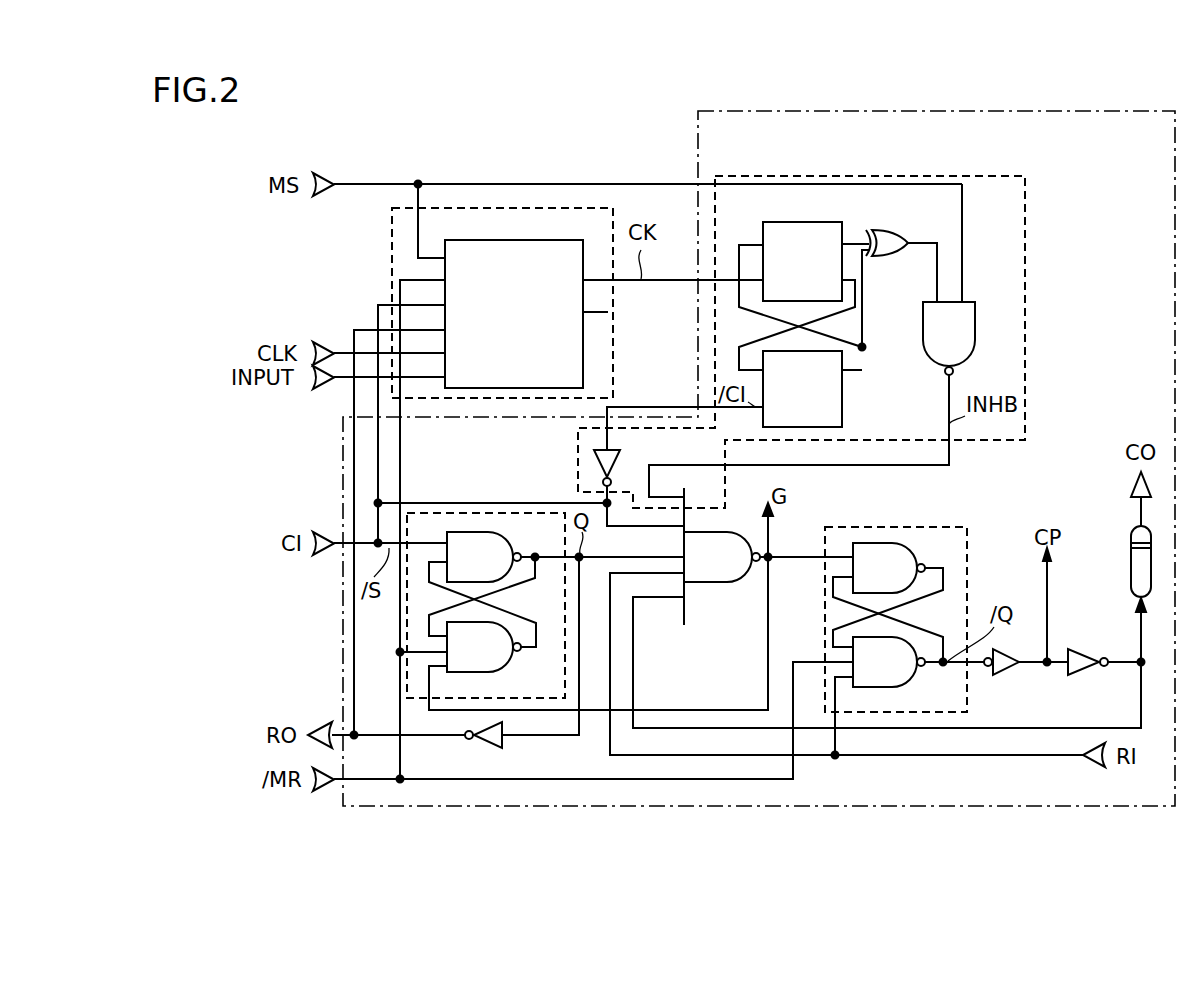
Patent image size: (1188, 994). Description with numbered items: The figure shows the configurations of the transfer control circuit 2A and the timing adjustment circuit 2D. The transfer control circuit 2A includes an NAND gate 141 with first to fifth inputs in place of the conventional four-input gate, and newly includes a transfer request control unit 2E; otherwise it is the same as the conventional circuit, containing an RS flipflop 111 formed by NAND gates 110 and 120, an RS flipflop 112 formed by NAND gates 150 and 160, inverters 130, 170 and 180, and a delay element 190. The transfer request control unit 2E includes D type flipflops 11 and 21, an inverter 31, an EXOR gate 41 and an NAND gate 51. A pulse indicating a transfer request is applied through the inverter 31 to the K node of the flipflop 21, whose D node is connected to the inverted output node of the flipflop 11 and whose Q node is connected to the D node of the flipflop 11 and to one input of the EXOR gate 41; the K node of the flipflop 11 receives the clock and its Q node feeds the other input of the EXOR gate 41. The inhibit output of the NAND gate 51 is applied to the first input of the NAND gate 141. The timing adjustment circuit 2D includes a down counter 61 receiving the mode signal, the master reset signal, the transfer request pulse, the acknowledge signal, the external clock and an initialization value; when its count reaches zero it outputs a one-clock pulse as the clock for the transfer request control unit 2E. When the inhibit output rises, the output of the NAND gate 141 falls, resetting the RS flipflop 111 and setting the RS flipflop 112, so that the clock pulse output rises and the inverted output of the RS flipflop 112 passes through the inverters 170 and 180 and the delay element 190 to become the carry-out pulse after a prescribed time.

The transfer control circuit 2A is at (798, 111).
The timing adjustment circuit 2D is at (511, 208).
The transfer request control unit 2E is at (892, 176).
The down counter 61 is at (483, 240).
The D type flipflop 11 is at (785, 222).
The D type flipflop 21 is at (842, 420).
The inverter 31 is at (616, 464).
The EXOR gate 41 is at (885, 257).
The NAND gate 51 is at (975, 339).
The NAND gate 110 is at (508, 541).
The RS flipflop 111 is at (407, 636).
The RS flipflop 112 is at (968, 567).
The NAND gate 120 is at (500, 672).
The inverter 130 is at (481, 749).
The NAND gate 141 is at (712, 531).
The NAND gate 150 is at (908, 545).
The NAND gate 160 is at (905, 690).
The inverter 170 is at (1006, 676).
The inverter 180 is at (1083, 676).
The delay element 190 is at (1131, 568).